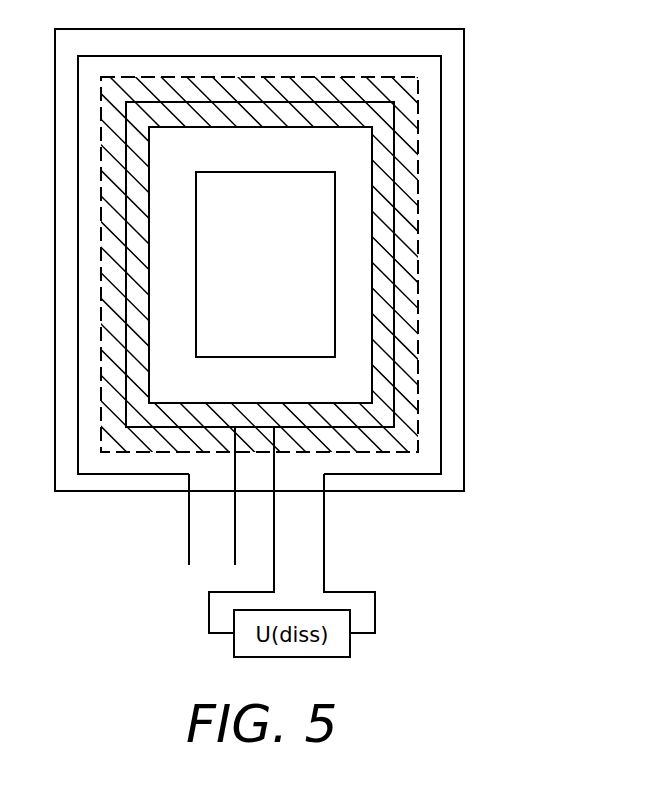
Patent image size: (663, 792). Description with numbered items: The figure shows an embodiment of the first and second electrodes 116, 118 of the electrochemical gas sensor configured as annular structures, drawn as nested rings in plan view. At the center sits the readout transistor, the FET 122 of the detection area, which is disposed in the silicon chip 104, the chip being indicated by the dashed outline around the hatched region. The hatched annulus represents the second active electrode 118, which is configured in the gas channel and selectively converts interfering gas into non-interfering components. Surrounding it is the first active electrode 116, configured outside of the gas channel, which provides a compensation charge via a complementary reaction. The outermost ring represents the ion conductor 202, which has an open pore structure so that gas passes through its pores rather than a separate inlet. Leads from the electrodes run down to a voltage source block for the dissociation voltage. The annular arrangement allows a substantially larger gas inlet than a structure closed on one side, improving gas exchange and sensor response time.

The silicon chip 104 is at (418, 117).
The first active electrode 116 is at (441, 302).
The second active electrode 118 is at (393, 403).
The FET 122 is at (335, 213).
The ion conductor 202 is at (464, 462).